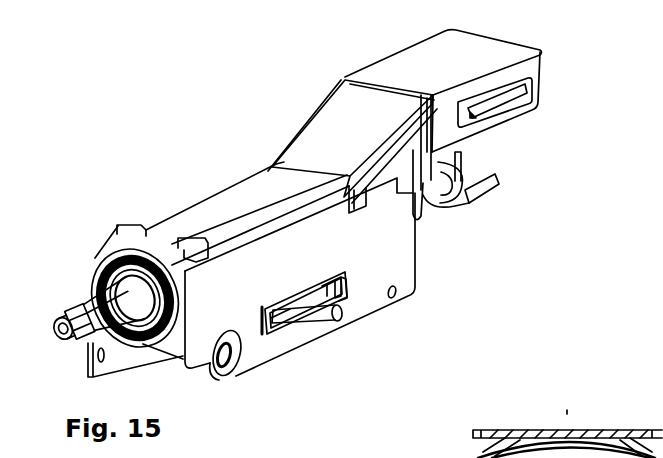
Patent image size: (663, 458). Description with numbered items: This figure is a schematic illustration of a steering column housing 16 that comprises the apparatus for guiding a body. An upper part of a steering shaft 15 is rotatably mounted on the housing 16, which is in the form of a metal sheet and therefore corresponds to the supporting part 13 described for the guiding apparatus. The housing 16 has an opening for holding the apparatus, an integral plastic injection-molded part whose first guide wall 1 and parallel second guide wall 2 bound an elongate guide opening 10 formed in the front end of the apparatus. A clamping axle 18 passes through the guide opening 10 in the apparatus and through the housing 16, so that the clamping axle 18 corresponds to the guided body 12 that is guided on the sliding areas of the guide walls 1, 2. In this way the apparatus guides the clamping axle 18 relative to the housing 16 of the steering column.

The first guide wall 1 is at (343, 275).
The second guide wall 2 is at (280, 323).
The guide opening 10 is at (268, 331).
The guided body 12 is at (353, 340).
The supporting part 13 is at (315, 205).
The steering shaft 15 is at (100, 288).
The housing 16 is at (242, 198).
The clamping axle 18 is at (337, 320).